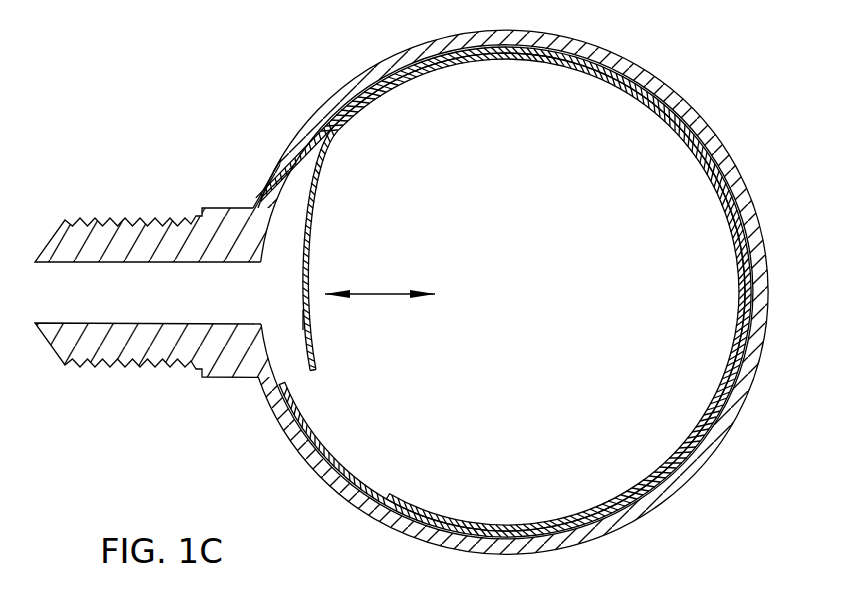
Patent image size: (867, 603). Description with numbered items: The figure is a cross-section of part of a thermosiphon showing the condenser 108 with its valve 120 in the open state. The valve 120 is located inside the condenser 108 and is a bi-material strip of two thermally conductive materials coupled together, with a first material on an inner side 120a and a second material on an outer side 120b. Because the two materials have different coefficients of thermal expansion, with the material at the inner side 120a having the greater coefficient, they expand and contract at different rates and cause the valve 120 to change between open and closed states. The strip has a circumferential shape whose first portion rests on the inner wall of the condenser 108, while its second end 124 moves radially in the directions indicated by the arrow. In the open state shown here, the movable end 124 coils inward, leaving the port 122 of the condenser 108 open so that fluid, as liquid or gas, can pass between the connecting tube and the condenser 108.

The condenser 108 is at (707, 122).
The valve 120 is at (474, 292).
The inner side 120a is at (323, 202).
The outer side 120b is at (290, 180).
The port 122 is at (167, 304).
The second end 124 is at (313, 333).